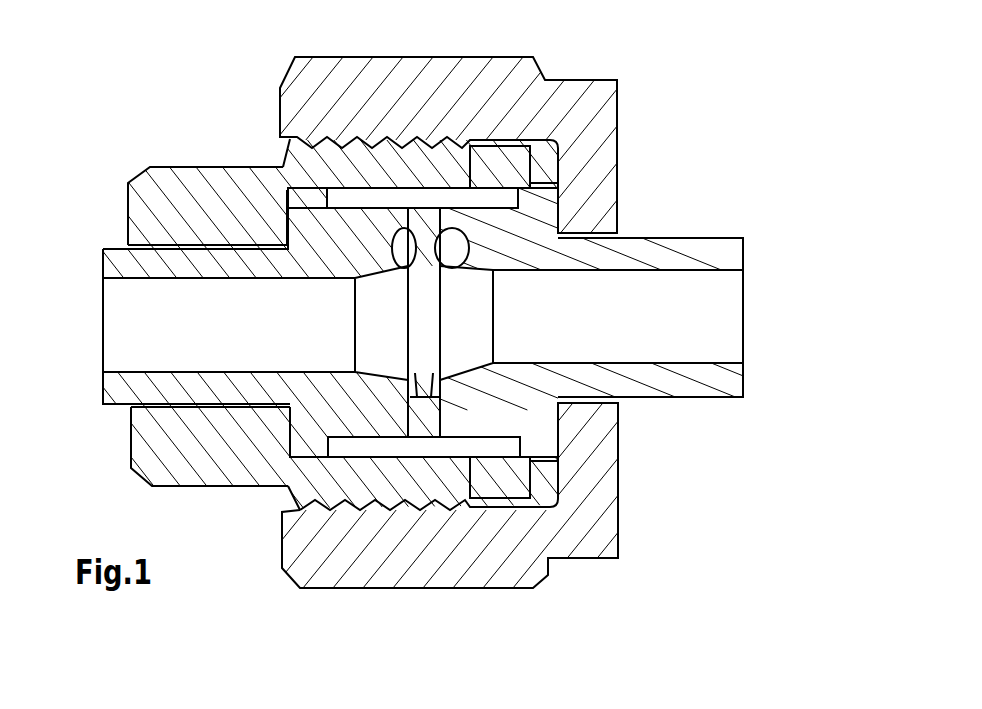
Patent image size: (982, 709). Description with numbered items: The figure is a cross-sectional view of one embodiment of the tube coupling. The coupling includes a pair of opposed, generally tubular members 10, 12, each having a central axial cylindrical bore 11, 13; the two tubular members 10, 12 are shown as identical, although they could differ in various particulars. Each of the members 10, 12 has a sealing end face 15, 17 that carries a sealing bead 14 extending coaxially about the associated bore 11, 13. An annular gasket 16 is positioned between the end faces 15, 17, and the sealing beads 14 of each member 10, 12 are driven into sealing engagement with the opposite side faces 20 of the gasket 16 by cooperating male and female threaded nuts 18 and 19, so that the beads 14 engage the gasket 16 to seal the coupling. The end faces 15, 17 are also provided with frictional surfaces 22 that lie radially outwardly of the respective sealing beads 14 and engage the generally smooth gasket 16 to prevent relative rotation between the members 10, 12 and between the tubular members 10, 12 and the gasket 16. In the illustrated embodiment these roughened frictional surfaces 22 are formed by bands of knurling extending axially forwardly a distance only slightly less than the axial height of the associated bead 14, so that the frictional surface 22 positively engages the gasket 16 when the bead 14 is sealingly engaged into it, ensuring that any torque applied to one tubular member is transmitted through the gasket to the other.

The tubular member 10 is at (118, 410).
The central axial cylindrical bore 11 is at (147, 374).
The tubular member 12 is at (672, 400).
The central axial cylindrical bore 13 is at (692, 362).
The sealing bead 14 is at (440, 360).
The sealing end face 15 is at (418, 210).
The annular gasket 16 is at (464, 258).
The sealing end face 17 is at (417, 447).
The male threaded nut 18 is at (193, 198).
The female threaded nut 19 is at (507, 72).
The side face 20 is at (440, 213).
The frictional surface 22 is at (440, 407).